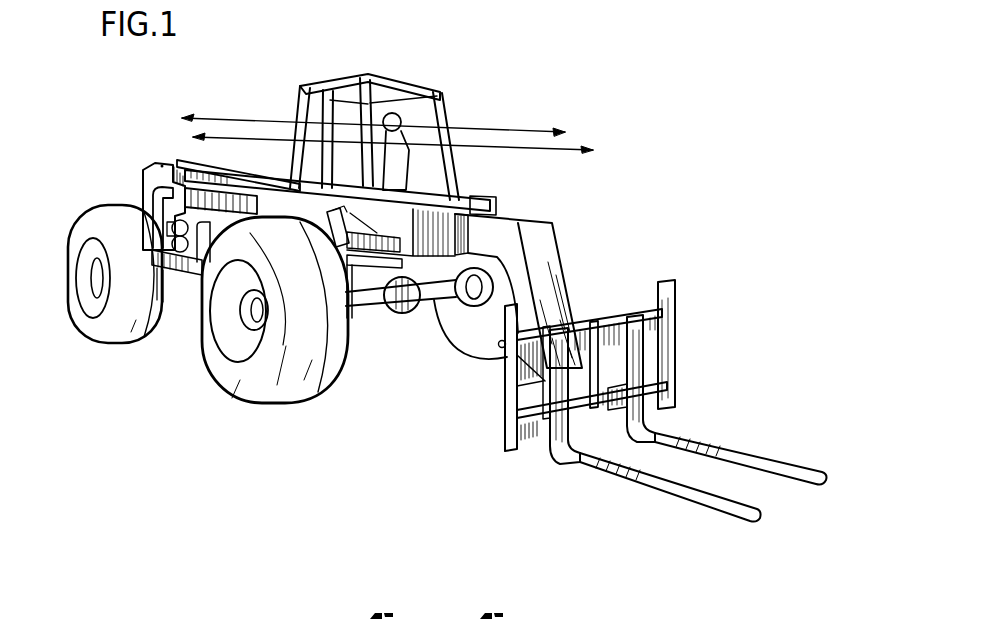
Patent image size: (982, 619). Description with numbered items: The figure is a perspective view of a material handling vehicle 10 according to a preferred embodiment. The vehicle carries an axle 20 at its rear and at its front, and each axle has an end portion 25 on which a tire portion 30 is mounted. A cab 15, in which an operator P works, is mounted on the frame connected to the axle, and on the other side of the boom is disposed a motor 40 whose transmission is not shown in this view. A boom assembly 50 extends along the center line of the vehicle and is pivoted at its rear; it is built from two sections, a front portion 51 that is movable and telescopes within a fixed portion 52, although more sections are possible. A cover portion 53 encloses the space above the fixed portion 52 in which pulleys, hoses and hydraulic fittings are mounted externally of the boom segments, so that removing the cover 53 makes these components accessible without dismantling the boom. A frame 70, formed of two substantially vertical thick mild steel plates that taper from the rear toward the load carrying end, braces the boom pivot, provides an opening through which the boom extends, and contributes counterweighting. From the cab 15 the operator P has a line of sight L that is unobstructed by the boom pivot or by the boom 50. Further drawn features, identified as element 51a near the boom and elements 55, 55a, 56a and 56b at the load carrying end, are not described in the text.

The material handling vehicle 10 is at (473, 73).
The cab 15 is at (328, 86).
The axle 20 is at (371, 320).
The end portion 25 is at (92, 270).
The tire portion 30 is at (112, 342).
The motor 40 is at (172, 203).
The boom assembly 50 is at (494, 187).
The front portion of boom 51 is at (513, 245).
The boom lower section 51a is at (562, 300).
The fixed portion of boom 52 is at (240, 173).
The cover portion 53 is at (277, 199).
The fork carriage 55 is at (507, 396).
The fork tine 55a is at (752, 521).
The fork upright 56a is at (537, 440).
The fork upright 56b is at (650, 328).
The frame 70 is at (403, 313).
The line of sight L is at (387, 132).
The operator P is at (410, 146).